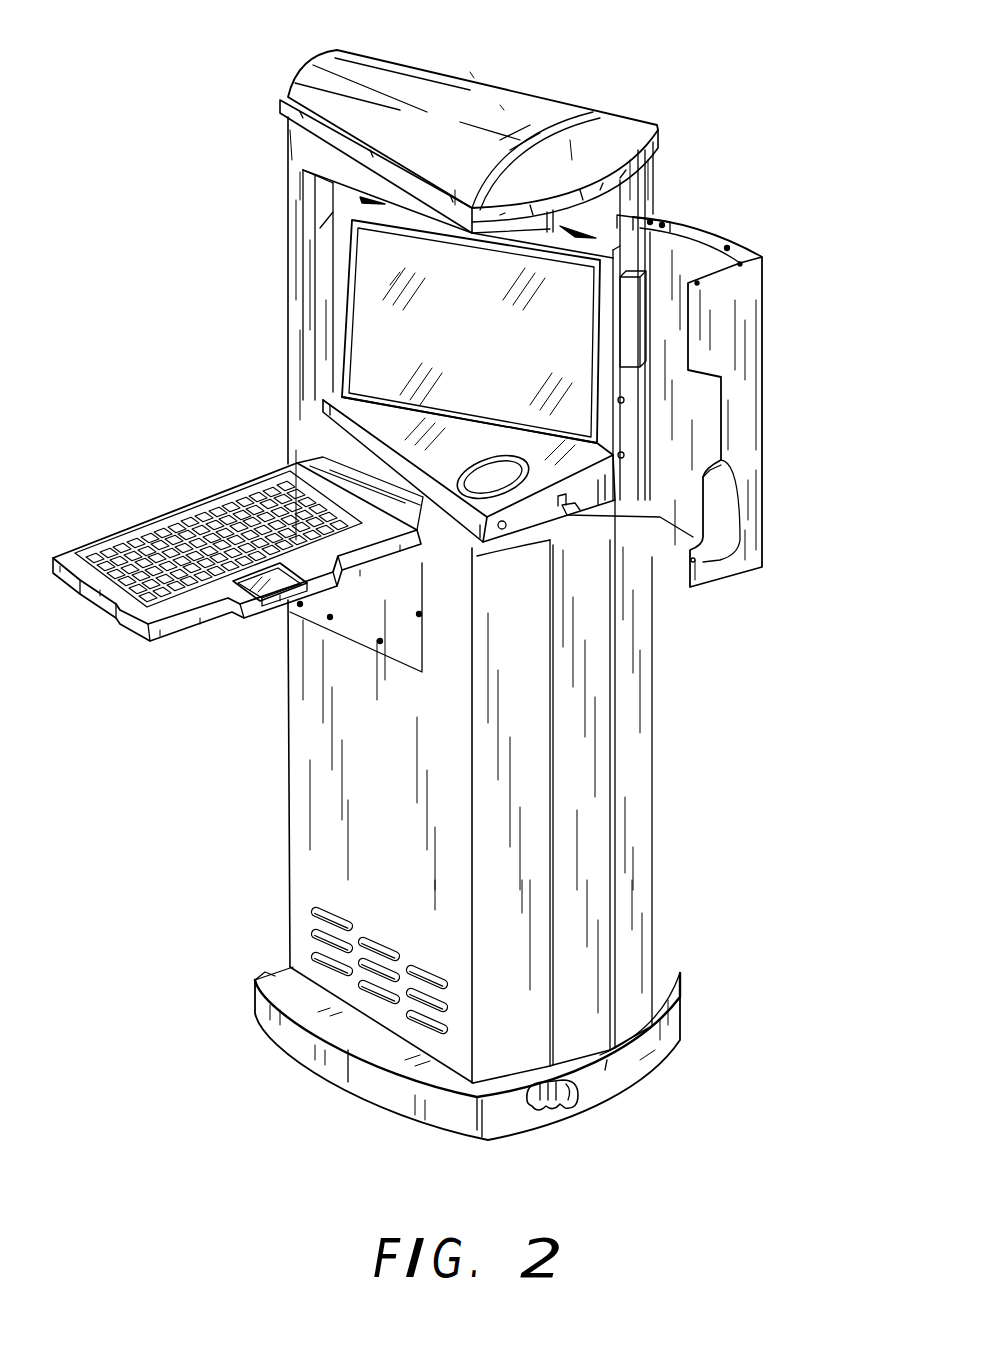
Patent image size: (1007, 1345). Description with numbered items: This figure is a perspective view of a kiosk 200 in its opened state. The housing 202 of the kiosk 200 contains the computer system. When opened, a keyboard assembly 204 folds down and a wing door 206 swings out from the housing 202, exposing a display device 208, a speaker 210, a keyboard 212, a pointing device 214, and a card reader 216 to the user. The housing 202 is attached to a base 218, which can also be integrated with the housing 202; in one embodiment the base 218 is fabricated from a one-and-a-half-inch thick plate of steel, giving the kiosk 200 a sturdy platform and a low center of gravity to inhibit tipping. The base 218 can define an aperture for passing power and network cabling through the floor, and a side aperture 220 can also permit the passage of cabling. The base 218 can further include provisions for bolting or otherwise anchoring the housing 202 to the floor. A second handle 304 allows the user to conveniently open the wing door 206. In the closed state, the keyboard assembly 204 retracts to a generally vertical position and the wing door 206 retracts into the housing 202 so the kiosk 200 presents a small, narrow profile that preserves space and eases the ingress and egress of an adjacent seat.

The kiosk 200 is at (732, 85).
The housing 202 is at (312, 877).
The keyboard assembly 204 is at (187, 507).
The wing door 206 is at (752, 440).
The display device 208 is at (368, 300).
The speaker 210 is at (503, 483).
The keyboard 212 is at (115, 553).
The pointing device 214 is at (253, 593).
The card reader 216 is at (650, 290).
The base 218 is at (650, 1060).
The side aperture 220 is at (545, 1108).
The second handle 304 is at (727, 515).